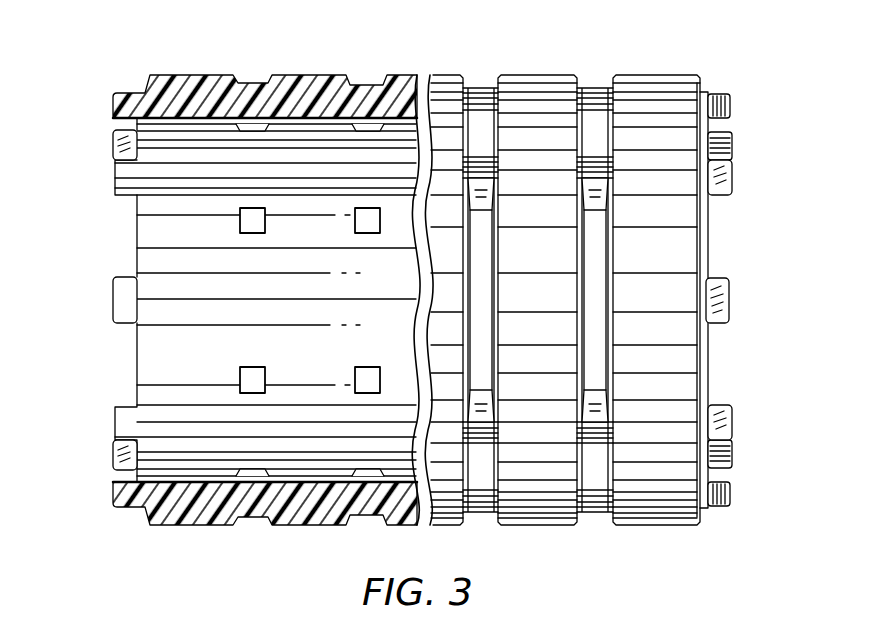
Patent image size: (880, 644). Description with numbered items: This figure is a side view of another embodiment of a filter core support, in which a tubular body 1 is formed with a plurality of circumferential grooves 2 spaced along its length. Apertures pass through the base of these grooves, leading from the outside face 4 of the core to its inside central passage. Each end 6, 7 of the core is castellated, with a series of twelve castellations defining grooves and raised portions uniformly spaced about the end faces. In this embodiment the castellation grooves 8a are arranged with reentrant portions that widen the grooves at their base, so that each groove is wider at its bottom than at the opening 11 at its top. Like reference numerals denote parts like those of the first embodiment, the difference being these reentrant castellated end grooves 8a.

The tubular body 1 is at (668, 78).
The circumferential grooves 2 is at (481, 80).
The outside face 4 is at (330, 47).
The end 6 is at (93, 397).
The end 7 is at (720, 364).
The grooves 8a is at (134, 228).
The opening 11 is at (114, 356).